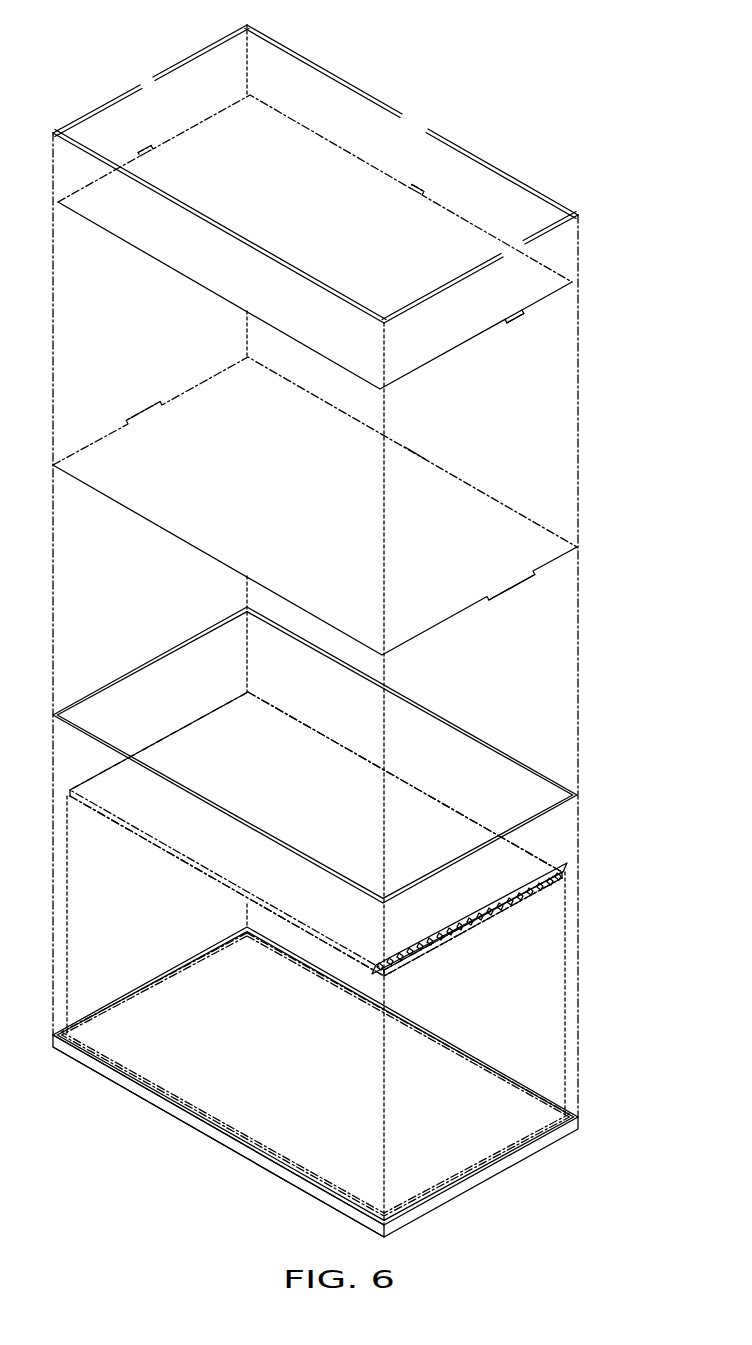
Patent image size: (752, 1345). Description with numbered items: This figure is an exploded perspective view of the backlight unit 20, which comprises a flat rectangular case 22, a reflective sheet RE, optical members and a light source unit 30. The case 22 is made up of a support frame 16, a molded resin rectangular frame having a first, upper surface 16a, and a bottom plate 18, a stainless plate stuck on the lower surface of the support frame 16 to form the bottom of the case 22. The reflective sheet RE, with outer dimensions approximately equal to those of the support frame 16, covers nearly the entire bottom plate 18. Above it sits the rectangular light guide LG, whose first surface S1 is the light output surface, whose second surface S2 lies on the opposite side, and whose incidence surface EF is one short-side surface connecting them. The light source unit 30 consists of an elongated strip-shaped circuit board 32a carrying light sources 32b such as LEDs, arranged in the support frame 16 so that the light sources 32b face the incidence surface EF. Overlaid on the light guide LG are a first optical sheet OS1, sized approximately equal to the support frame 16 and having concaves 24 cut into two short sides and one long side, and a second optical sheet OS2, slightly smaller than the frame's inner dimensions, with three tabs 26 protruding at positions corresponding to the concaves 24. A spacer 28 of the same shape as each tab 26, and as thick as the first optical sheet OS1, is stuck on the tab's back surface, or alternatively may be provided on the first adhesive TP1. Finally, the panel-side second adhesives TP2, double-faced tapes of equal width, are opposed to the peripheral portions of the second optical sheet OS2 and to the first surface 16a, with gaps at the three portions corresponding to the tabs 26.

The backlight unit 20 is at (606, 691).
The second adhesives TP2 is at (341, 79).
The tabs 26 is at (143, 149).
The spacer 28 is at (141, 153).
The second optical sheet OS2 is at (165, 249).
The concaves 24 is at (139, 419).
The first optical sheet OS1 is at (140, 504).
The first adhesive TP1 is at (445, 717).
The light guide LG is at (178, 830).
The first surface S1 is at (292, 740).
The second surface S2 is at (208, 881).
The incidence surface EF is at (385, 978).
The light source unit 30 is at (469, 929).
The circuit board 32a is at (525, 900).
The light sources 32b is at (431, 952).
The reflective sheet RE is at (180, 1000).
The case 22 is at (295, 1082).
The support frame 16 is at (100, 1071).
The bottom plate 18 is at (160, 1068).
The first surface 16a is at (190, 1112).